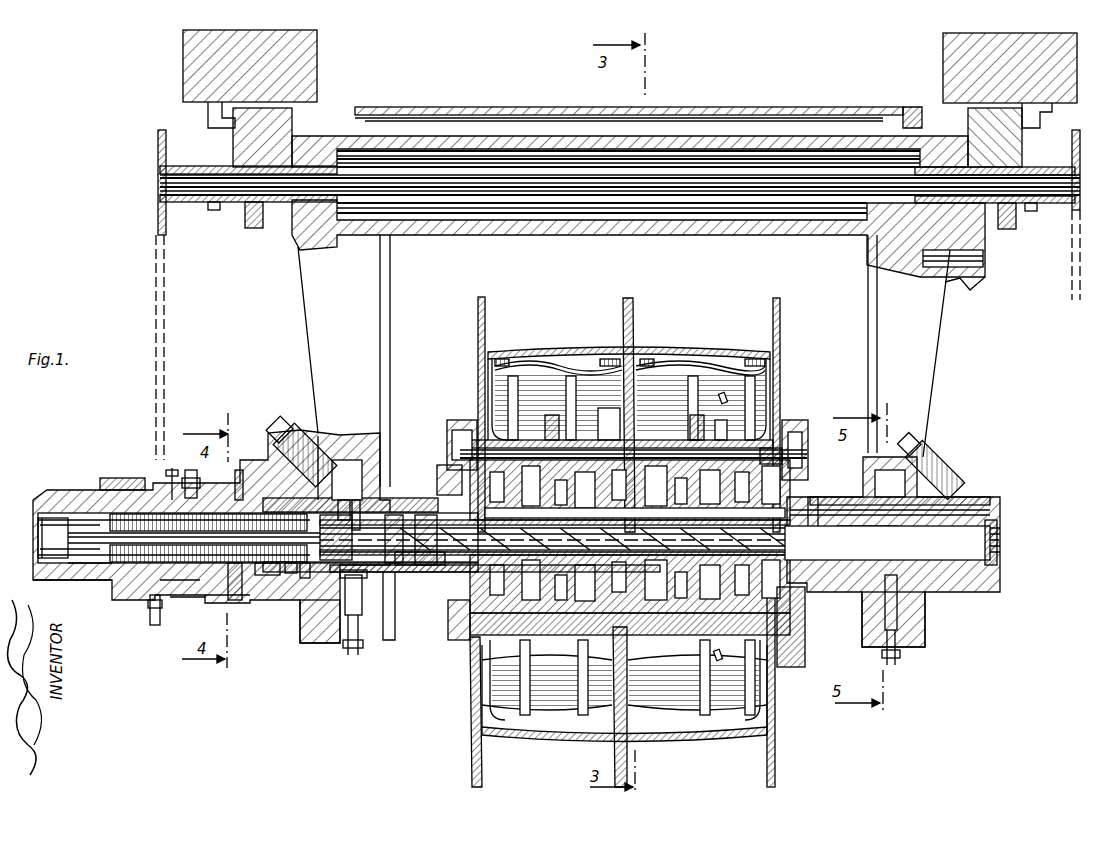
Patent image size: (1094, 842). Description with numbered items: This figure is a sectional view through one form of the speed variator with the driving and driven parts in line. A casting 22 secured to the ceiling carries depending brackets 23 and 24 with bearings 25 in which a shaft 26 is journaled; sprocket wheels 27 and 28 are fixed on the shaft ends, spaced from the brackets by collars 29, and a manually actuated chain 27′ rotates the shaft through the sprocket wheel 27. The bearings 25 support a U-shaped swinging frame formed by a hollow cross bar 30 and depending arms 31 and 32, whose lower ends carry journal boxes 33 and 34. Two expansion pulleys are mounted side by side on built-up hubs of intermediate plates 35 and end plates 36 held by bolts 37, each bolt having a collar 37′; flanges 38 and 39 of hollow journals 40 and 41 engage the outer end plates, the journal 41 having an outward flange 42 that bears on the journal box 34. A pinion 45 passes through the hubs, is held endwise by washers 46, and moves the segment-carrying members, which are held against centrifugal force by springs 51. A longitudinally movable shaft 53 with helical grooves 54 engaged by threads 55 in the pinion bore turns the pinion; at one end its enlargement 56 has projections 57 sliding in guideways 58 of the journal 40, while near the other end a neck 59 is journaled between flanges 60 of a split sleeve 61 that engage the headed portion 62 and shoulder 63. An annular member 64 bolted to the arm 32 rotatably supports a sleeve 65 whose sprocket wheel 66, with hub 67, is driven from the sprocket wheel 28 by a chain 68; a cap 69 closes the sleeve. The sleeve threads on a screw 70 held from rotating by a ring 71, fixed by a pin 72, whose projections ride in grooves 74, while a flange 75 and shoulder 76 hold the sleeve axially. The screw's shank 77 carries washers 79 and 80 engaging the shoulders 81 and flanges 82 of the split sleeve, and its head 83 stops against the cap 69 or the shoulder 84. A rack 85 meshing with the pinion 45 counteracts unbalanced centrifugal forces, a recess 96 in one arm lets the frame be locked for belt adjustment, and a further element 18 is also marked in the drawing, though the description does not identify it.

The bolt 18 is at (346, 615).
The casting 22 is at (800, 107).
The bracket 23 is at (975, 120).
The bracket 24 is at (282, 135).
The bearings 25 is at (245, 212).
The shaft 26 is at (660, 185).
The sprocket wheel 27 is at (1072, 168).
The chain 27′ is at (1072, 268).
The sprocket wheel 28 is at (158, 165).
The collars 29 is at (212, 205).
The cross bar 30 is at (668, 236).
The arm 31 is at (947, 355).
The arm 32 is at (358, 307).
The journal box 33 is at (937, 600).
The journal box 34 is at (312, 612).
The intermediate plates 35 is at (710, 430).
The end plates 36 is at (488, 306).
The bolts 37 is at (472, 440).
The collar 37′ is at (778, 432).
The flange 38 is at (800, 460).
The flange 39 is at (445, 440).
The hollow journal 40 is at (985, 497).
The hollow journal 41 is at (390, 640).
The flange 42 is at (268, 575).
The pinion 45 is at (800, 600).
The washers 46 is at (470, 612).
The springs 51 is at (442, 478).
The shaft 53 is at (823, 545).
The helical grooves 54 is at (426, 515).
The threads 55 is at (458, 640).
The enlargement 56 is at (870, 595).
The projections 57 is at (940, 500).
The guideways 58 is at (998, 542).
The neck 59 is at (395, 512).
The flanges 60 is at (354, 598).
The split sleeve 61 is at (343, 500).
The headed portion 62 is at (368, 470).
The shoulder 63 is at (432, 566).
The annular member 64 is at (193, 580).
The sleeve 65 is at (75, 581).
The sprocket wheel 66 is at (150, 612).
The hub 67 is at (73, 497).
The chain 68 is at (165, 320).
The cap 69 is at (38, 530).
The screw 70 is at (110, 575).
The ring 71 is at (236, 600).
The pin 72 is at (237, 477).
The grooves 74 is at (178, 563).
The flange 75 is at (215, 590).
The shoulder 76 is at (195, 485).
The shank 77 is at (290, 575).
The washer 79 is at (342, 521).
The washer 80 is at (303, 580).
The shoulders 81 is at (345, 470).
The flanges 82 is at (300, 480).
The head 83 is at (100, 537).
The shoulder 84 is at (176, 474).
The rack 85 is at (806, 478).
The recess 96 is at (968, 284).